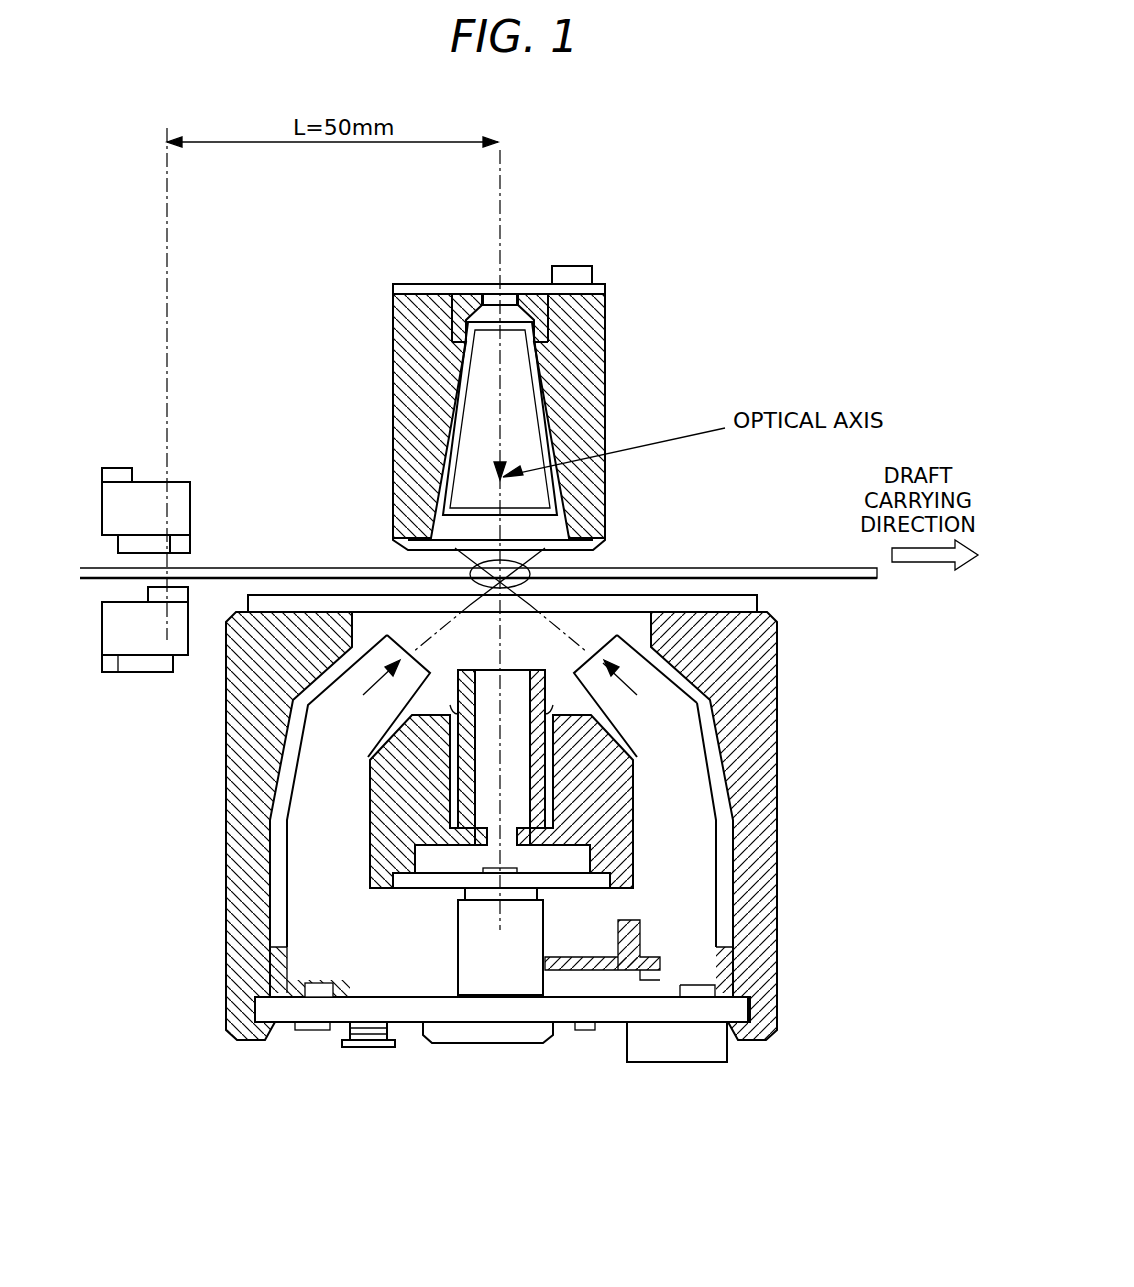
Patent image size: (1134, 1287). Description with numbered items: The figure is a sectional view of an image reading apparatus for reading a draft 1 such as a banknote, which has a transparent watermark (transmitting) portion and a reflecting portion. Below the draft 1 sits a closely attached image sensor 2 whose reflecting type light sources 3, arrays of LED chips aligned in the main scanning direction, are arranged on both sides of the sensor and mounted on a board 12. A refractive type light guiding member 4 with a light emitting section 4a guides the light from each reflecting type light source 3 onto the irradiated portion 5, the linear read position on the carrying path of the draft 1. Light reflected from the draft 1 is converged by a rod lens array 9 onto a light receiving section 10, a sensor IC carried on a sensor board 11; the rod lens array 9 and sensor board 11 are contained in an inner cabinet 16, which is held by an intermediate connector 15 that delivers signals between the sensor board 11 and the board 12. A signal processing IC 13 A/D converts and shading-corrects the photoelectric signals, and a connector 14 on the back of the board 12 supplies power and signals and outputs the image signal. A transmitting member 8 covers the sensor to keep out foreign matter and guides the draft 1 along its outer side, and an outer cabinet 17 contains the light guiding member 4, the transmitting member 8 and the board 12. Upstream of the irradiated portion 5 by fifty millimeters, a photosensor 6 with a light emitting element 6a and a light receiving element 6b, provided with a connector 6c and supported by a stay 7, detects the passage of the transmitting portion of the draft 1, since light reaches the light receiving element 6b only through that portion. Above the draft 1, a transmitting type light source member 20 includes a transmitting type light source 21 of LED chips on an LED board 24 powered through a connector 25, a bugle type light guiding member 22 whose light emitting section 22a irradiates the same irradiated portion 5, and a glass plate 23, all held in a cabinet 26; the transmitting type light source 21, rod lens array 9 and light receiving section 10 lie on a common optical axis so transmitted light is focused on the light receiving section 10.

The draft 1 is at (850, 573).
The closely attached image sensor 2 is at (778, 1026).
The reflecting type light source 3 is at (292, 1030).
The refractive type light guiding member 4 is at (310, 862).
The light emitting section 4a is at (690, 648).
The irradiated portion 5 is at (560, 570).
The photosensor 6 is at (148, 485).
The light emitting element 6a is at (190, 545).
The light receiving element 6b is at (178, 604).
The connector 6c is at (120, 468).
The stay 7 is at (150, 540).
The transmitting member 8 is at (668, 605).
The rod lens array 9 is at (453, 707).
The light receiving section 10 is at (527, 860).
The sensor board 11 is at (600, 880).
The board 12 is at (523, 1044).
The signal processing IC 13 is at (450, 1047).
The connector 14 is at (695, 1047).
The intermediate connector 15 is at (533, 922).
The inner cabinet 16 is at (393, 782).
The outer cabinet 17 is at (253, 962).
The transmitting type light source member 20 is at (590, 312).
The transmitting type light source 21 is at (500, 296).
The bugle type light guiding member 22 is at (540, 372).
The light emitting section 22a is at (560, 492).
The glass plate 23 is at (565, 527).
The LED board 24 is at (452, 300).
The connector 25 is at (572, 276).
The cabinet 26 is at (412, 398).